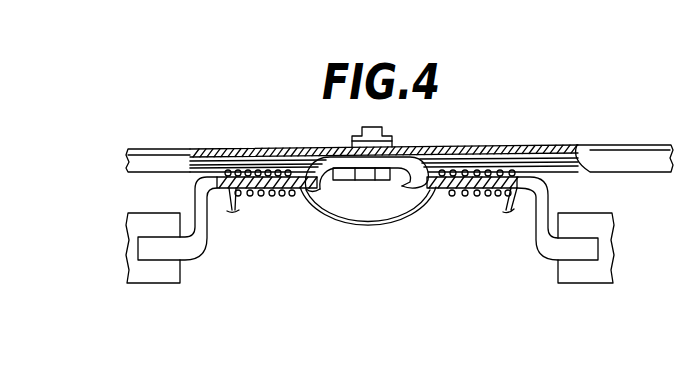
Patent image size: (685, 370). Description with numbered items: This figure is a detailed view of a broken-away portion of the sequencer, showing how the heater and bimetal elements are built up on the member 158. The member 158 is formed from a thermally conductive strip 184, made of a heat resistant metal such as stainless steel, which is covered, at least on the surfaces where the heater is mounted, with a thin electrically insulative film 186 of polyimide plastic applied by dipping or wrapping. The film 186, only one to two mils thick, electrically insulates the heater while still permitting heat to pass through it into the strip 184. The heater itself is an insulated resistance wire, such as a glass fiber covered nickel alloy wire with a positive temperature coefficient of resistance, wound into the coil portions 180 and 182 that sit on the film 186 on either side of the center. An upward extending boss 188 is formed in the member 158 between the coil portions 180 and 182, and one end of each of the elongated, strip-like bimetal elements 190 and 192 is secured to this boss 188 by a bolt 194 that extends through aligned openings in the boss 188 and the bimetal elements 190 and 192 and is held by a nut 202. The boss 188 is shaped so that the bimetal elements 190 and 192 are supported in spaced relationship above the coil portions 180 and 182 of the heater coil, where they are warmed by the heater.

The member 158 is at (203, 228).
The coil portion 180 is at (467, 172).
The coil portion 182 is at (267, 182).
The thermally conductive strip 184 is at (245, 193).
The electrically insulative film 186 is at (283, 194).
The boss 188 is at (397, 163).
The bimetal element 190 is at (590, 147).
The bimetal element 192 is at (150, 155).
The bolt 194 is at (370, 172).
The nut 202 is at (351, 143).